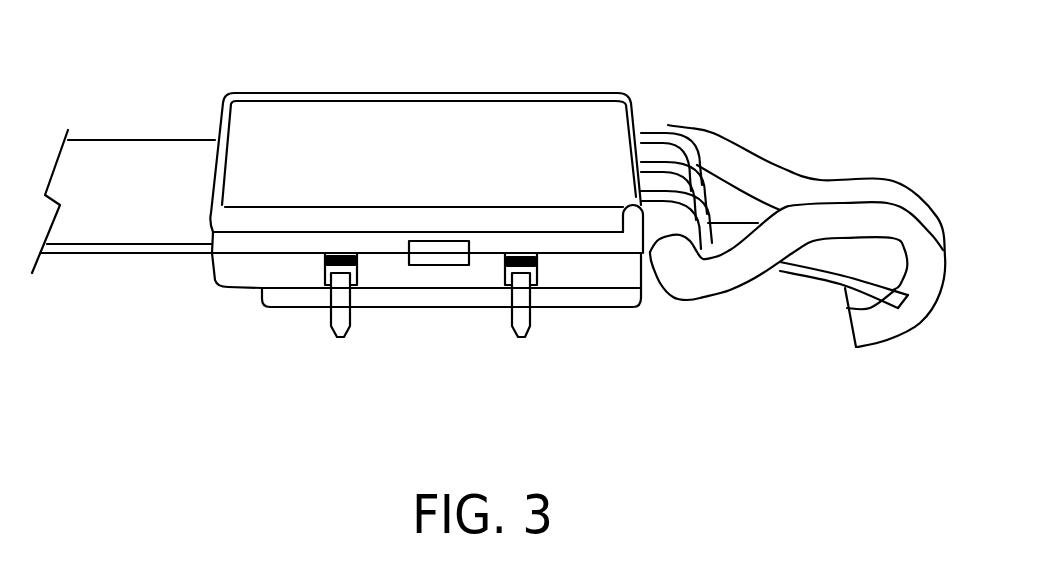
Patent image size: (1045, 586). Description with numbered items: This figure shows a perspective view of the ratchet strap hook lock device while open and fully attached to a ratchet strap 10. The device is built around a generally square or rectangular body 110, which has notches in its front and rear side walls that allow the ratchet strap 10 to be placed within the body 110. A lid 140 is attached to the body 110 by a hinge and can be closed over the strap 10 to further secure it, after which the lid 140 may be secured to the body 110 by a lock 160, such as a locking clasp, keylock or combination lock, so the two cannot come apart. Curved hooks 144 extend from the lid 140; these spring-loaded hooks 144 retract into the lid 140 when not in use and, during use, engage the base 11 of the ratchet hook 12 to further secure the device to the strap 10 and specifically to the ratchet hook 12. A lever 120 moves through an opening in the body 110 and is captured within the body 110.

The ratchet strap 10 is at (173, 227).
The base 11 is at (674, 248).
The ratchet hook 12 is at (857, 187).
The body 110 is at (470, 278).
The lever 120 is at (818, 272).
The lid 140 is at (485, 243).
The hook 144 is at (655, 147).
The lock 160 is at (441, 252).